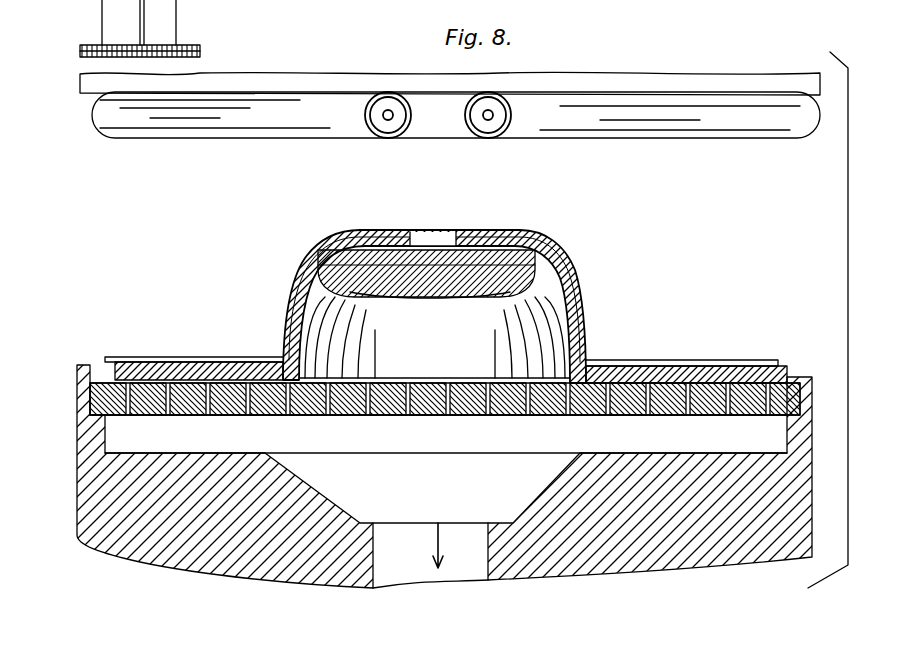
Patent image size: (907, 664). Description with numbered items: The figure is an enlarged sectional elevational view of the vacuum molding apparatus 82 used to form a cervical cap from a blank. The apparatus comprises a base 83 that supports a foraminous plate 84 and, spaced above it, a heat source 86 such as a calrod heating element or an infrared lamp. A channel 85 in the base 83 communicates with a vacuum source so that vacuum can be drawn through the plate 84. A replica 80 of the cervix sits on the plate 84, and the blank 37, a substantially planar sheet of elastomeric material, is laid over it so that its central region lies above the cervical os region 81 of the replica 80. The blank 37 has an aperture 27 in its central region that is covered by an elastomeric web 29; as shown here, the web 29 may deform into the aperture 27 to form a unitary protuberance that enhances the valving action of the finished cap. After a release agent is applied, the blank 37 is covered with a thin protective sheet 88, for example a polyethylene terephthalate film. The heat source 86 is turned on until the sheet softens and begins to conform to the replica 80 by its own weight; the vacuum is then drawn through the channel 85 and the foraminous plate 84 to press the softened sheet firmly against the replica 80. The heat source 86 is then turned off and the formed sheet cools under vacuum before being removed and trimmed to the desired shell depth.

The aperture 27 is at (455, 258).
The elastomeric web 29 is at (408, 260).
The blank 37 is at (768, 378).
The replica 80 is at (572, 308).
The cervical os region 81 is at (444, 283).
The vacuum molding apparatus 82 is at (237, 265).
The base 83 is at (92, 489).
The foraminous plate 84 is at (636, 418).
The channel 85 is at (483, 546).
The heat source 86 is at (272, 130).
The protective sheet 88 is at (368, 233).